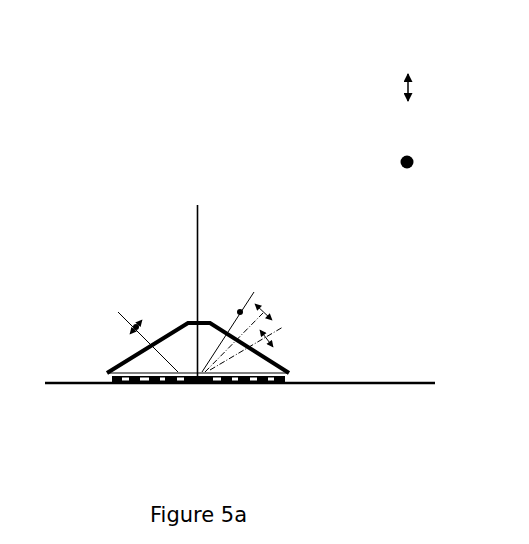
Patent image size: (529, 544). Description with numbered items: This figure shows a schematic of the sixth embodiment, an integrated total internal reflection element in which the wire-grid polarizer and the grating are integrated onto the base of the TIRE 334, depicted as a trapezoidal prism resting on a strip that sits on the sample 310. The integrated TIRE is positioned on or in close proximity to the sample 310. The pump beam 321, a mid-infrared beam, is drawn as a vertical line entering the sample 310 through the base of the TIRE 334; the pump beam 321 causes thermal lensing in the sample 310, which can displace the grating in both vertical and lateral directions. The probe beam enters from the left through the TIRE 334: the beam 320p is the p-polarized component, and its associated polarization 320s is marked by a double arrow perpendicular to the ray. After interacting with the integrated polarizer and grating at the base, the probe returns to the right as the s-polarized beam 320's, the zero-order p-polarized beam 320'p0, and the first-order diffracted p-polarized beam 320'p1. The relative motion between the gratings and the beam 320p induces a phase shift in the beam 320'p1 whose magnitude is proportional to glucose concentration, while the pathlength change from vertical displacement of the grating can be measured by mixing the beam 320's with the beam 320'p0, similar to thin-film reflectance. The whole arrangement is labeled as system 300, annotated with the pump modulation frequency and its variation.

The optical system 300 is at (441, 86).
The sample 310 is at (240, 396).
The pump beam 321 is at (198, 282).
The TIRE 334 is at (187, 316).
The beam 320p is at (139, 319).
The polarization of incident light 320s is at (132, 329).
The beam 320's is at (249, 312).
The beam 320'p0 is at (271, 327).
The beam 320'p1 is at (284, 348).